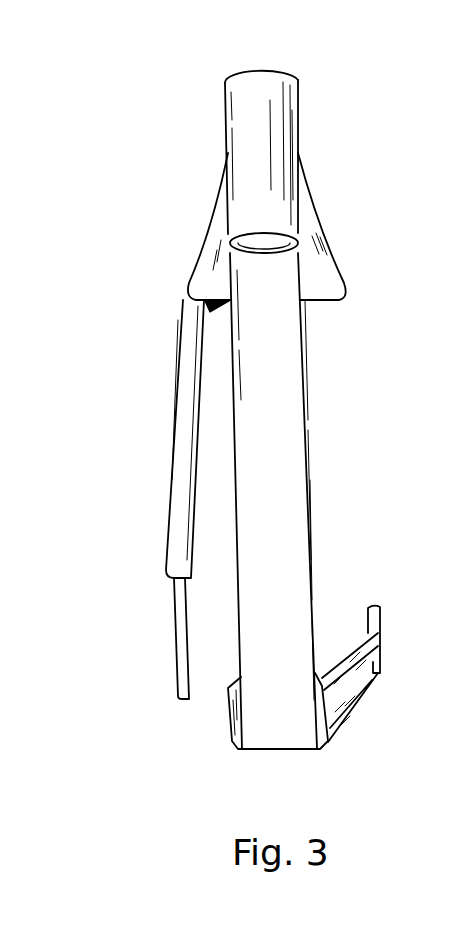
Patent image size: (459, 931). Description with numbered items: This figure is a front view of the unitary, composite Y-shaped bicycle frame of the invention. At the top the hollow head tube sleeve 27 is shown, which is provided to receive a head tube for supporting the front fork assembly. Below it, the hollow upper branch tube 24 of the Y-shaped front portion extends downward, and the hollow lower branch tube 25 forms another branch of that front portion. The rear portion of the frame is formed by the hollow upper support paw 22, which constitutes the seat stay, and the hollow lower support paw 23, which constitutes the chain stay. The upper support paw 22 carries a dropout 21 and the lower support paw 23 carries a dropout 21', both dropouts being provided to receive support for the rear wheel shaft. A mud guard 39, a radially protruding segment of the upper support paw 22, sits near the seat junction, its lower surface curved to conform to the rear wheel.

The head tube sleeve 27 is at (299, 78).
The mud guard 39 is at (337, 267).
The upper branch tube 24 is at (304, 346).
The upper support paw 22 is at (175, 413).
The dropout 21 is at (165, 665).
The lower branch tube 25 is at (300, 592).
The lower support paw 23 is at (362, 693).
The dropout 21' is at (402, 624).